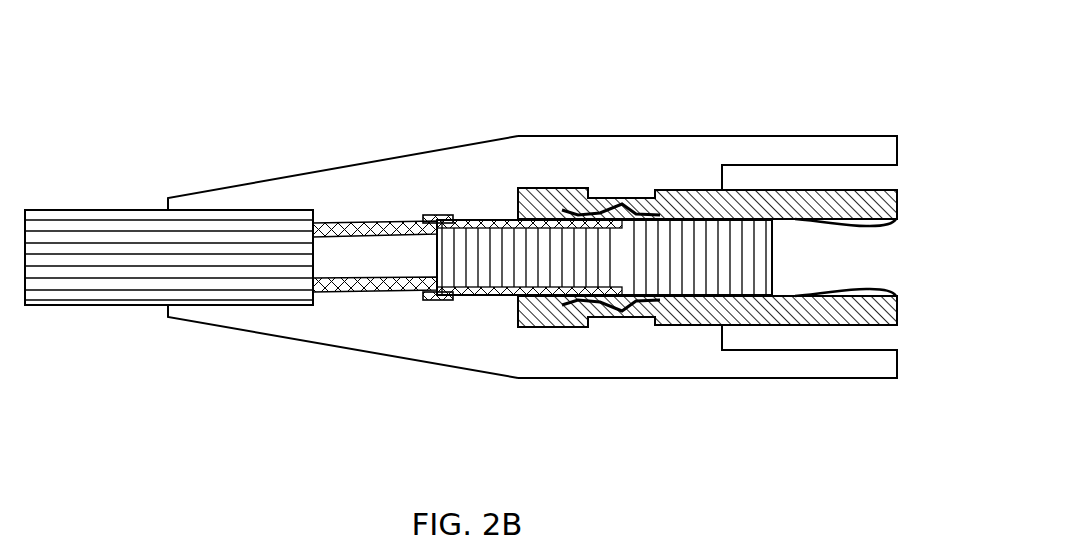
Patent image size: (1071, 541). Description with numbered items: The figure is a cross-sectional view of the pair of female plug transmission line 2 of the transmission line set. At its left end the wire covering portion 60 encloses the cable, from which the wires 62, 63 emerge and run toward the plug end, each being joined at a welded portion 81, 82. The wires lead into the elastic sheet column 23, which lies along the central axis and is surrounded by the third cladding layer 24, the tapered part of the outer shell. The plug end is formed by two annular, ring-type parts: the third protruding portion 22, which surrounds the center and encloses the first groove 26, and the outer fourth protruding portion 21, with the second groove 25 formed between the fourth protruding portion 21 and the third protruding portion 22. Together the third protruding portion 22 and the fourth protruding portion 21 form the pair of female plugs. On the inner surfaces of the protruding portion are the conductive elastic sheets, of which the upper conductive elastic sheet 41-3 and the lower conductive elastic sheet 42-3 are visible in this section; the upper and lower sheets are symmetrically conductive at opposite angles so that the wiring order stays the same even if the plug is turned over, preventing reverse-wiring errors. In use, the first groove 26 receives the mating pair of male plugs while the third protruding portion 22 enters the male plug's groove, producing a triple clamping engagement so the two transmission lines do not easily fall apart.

The pair of female plug transmission line 2 is at (300, 62).
The fourth protruding portion 21 is at (598, 150).
The third protruding portion 22 is at (756, 200).
The elastic sheet column 23 is at (697, 240).
The third cladding layer 24 is at (480, 160).
The second groove 25 is at (813, 175).
The first groove 26 is at (811, 280).
The upper conductive elastic sheet 41-3 is at (865, 218).
The lower conductive elastic sheet 42-3 is at (873, 325).
The wire covering portion 60 is at (128, 228).
The wire 62 is at (356, 298).
The wire 63 is at (355, 223).
The welded portion 81 is at (430, 215).
The welded portion 82 is at (440, 300).